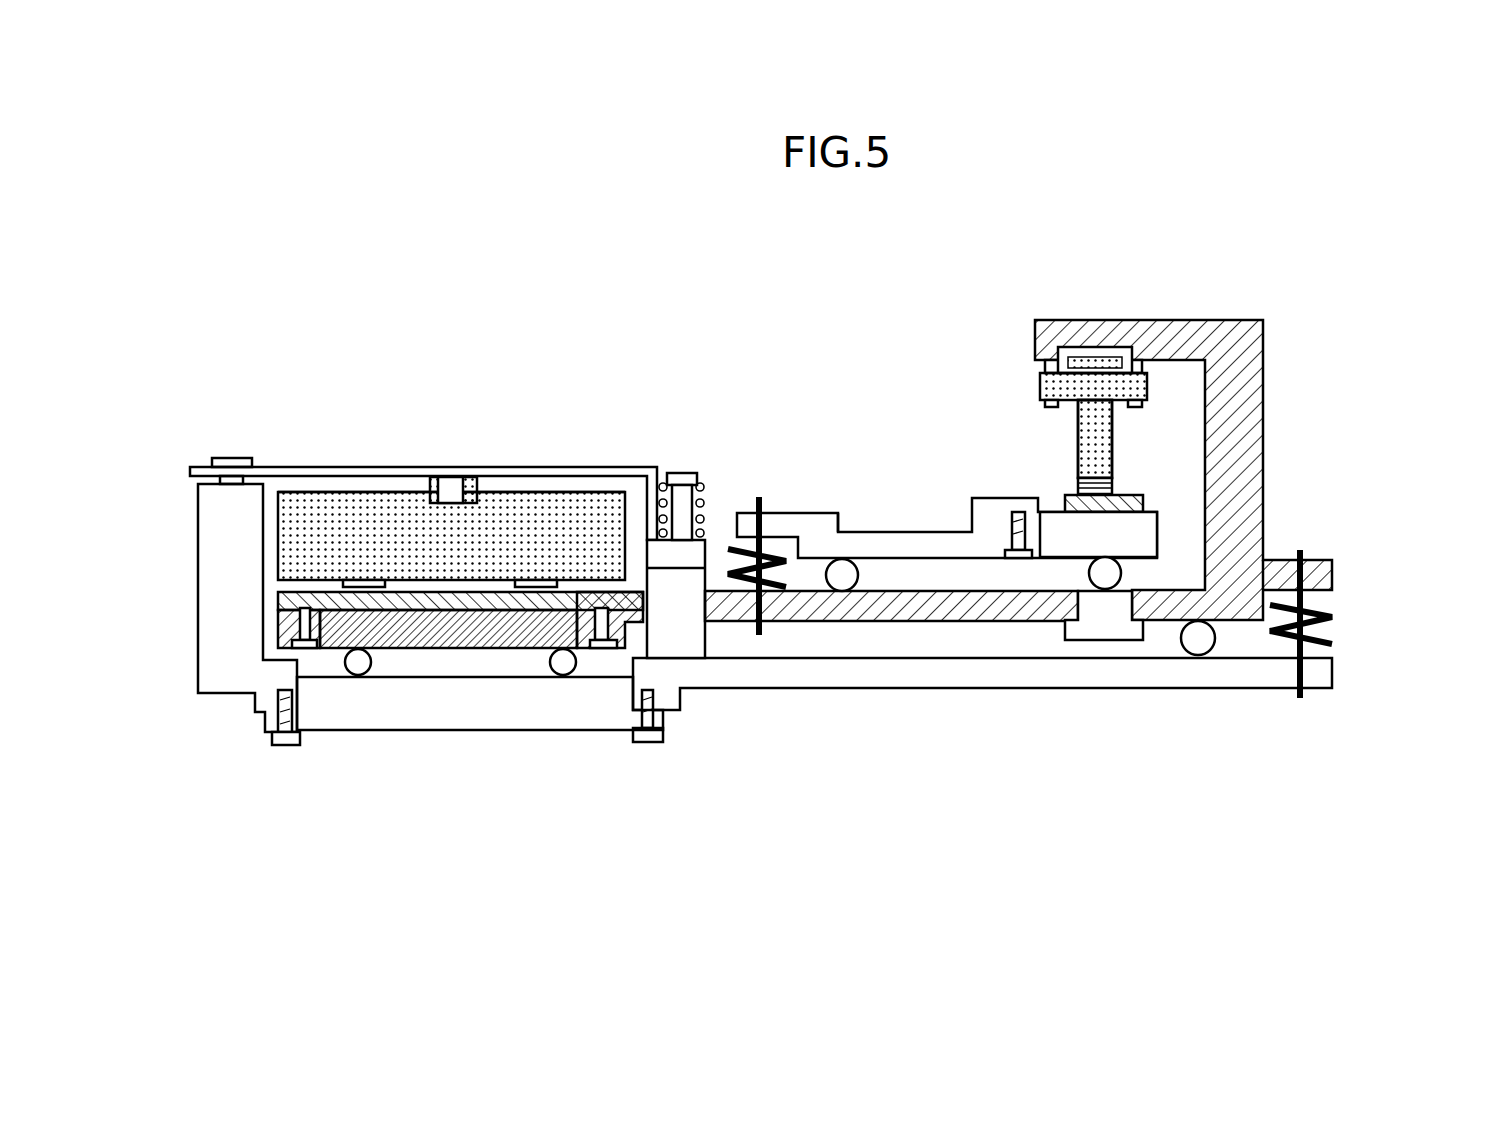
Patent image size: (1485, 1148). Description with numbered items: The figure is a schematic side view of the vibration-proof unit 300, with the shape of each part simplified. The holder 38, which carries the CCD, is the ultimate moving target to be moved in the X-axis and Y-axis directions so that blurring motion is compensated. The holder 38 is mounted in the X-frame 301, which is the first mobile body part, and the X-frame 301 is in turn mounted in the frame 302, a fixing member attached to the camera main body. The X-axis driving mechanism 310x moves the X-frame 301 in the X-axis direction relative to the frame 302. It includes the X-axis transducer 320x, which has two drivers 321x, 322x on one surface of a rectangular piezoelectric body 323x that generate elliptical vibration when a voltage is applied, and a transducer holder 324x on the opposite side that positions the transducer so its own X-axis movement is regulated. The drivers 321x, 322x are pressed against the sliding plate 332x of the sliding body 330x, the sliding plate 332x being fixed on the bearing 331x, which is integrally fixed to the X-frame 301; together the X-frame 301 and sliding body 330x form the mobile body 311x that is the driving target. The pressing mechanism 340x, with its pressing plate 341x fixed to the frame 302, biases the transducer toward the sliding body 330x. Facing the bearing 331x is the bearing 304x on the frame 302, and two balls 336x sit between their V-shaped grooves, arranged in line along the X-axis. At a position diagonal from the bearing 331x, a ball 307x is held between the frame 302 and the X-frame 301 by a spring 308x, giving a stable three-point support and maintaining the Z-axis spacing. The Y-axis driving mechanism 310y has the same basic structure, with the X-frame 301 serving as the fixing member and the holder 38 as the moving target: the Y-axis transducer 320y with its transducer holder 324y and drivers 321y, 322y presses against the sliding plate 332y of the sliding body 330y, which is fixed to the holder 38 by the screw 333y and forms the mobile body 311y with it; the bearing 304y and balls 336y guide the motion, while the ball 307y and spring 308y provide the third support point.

The vibration-proof unit 300 is at (497, 262).
The frame 302 is at (1285, 745).
The pressing plate 341x is at (273, 467).
The X-axis driving mechanism 310x is at (605, 478).
The X-axis transducer 320x is at (372, 496).
The piezoelectric body 323x is at (514, 492).
The transducer holder 324x is at (470, 493).
The driver 321x is at (363, 580).
The driver 322x is at (546, 580).
The sliding plate 332x is at (465, 602).
The sliding body 330x is at (425, 652).
The bearing 331x is at (280, 630).
The balls 336x is at (357, 668).
The bearing 304x is at (515, 713).
The pressing mechanism 340x is at (668, 458).
The X-frame 301 is at (800, 607).
The mobile body 311x is at (892, 616).
The mobile body 311y is at (953, 538).
The holder 38 is at (818, 527).
The spring 308y is at (750, 577).
The ball 307y is at (842, 575).
The screw 333y is at (1017, 558).
The Y-axis driving mechanism 310y is at (1043, 425).
The transducer holder 324y is at (1108, 377).
The Y-axis transducer 320y is at (1122, 436).
The driver 321y is at (1115, 485).
The driver 322y is at (1095, 486).
The sliding plate 332y is at (1143, 503).
The sliding body 330y is at (1166, 524).
The bearing 304y is at (1095, 622).
The balls 336y is at (1105, 575).
The ball 307x is at (1198, 638).
The spring 308x is at (1333, 617).